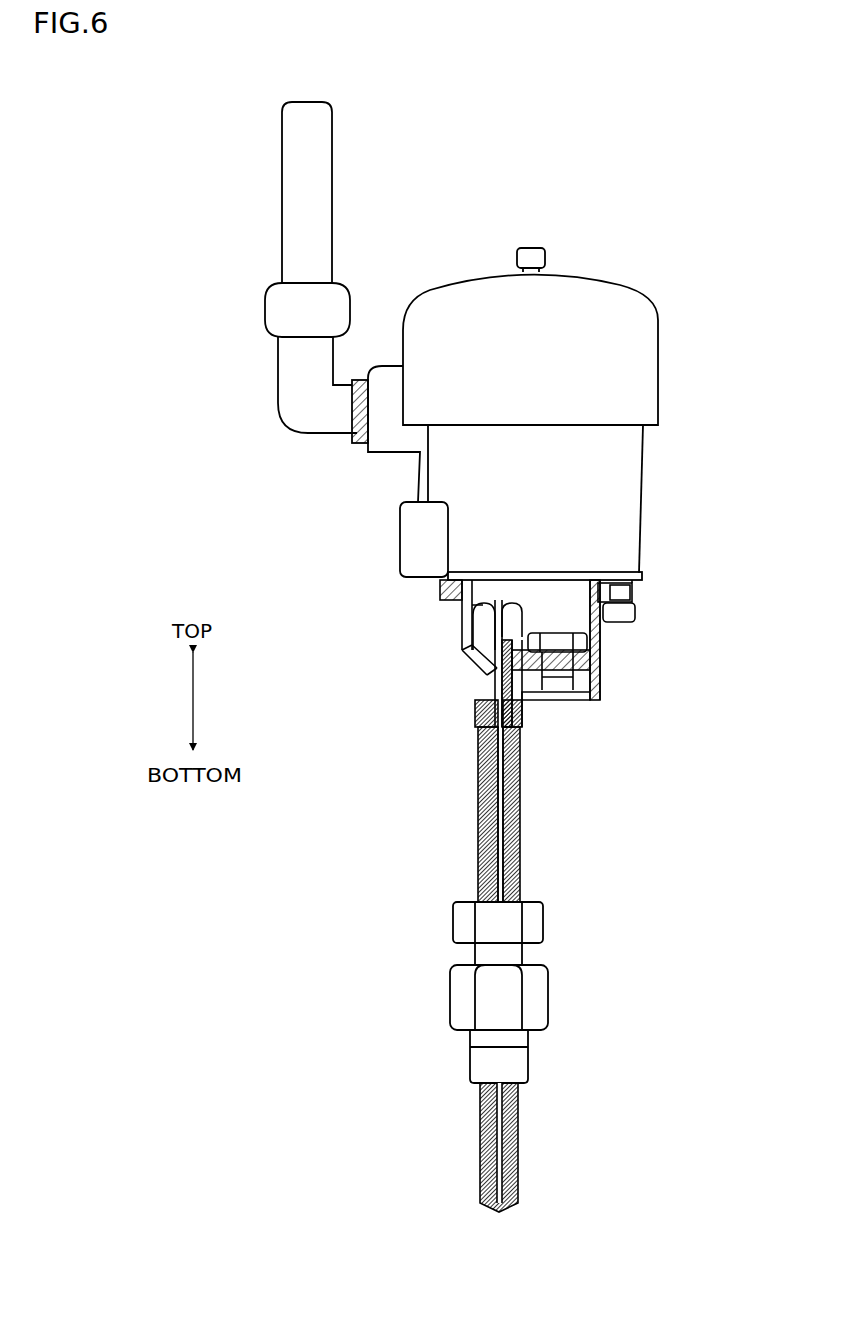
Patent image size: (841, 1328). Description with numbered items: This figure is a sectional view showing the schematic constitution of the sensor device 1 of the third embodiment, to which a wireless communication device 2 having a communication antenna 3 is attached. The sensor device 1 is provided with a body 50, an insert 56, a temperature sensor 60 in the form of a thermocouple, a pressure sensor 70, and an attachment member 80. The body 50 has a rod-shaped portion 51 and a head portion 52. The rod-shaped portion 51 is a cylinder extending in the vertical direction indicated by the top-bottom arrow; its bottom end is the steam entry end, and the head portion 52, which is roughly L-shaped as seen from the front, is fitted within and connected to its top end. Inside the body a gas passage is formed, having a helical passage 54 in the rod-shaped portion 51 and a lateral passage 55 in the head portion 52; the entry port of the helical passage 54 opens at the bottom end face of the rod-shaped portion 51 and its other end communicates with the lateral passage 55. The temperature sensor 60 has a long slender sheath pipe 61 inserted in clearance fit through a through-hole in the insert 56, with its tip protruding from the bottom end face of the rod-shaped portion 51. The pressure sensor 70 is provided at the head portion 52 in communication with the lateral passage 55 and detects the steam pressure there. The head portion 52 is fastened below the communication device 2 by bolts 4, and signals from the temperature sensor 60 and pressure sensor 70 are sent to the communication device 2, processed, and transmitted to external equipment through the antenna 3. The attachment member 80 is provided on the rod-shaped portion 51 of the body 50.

The sensor device 1 is at (370, 750).
The wireless communication device 2 is at (575, 275).
The communication antenna 3 is at (332, 128).
The bolts 4 is at (636, 610).
The body 50 is at (478, 847).
The rod-shaped portion 51 is at (480, 1130).
The head portion 52 is at (473, 672).
The helical passage 54 is at (517, 1140).
The lateral passage 55 is at (527, 680).
The insert 56 is at (517, 820).
The temperature sensor 60 is at (462, 615).
The sheath pipe 61 is at (513, 803).
The pressure sensor 70 is at (600, 640).
The attachment member 80 is at (450, 993).